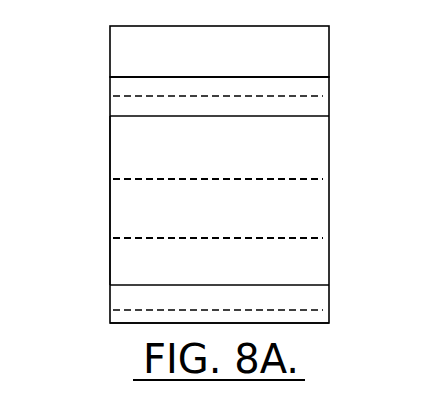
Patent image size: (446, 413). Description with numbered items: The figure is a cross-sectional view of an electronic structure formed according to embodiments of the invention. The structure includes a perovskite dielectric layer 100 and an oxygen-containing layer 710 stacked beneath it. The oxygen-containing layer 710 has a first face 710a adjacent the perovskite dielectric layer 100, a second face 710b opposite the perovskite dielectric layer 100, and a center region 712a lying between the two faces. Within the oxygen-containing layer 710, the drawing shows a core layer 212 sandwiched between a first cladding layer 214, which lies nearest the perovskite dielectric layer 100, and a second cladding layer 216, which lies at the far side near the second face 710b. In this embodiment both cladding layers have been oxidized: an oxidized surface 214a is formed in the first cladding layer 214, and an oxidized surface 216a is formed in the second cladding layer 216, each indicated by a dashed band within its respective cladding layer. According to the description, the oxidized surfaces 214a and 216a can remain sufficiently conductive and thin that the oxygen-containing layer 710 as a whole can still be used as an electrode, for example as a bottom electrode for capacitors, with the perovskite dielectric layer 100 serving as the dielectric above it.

The perovskite dielectric layer 100 is at (244, 62).
The oxygen-containing layer 710 is at (329, 77).
The first face 710a is at (128, 77).
The second face 710b is at (125, 326).
The first cladding layer 214 is at (113, 103).
The oxidized surface 214a is at (113, 88).
The core layer 212 is at (244, 155).
The center region 712a is at (191, 217).
The second cladding layer 216 is at (115, 298).
The oxidized surface 216a is at (308, 313).